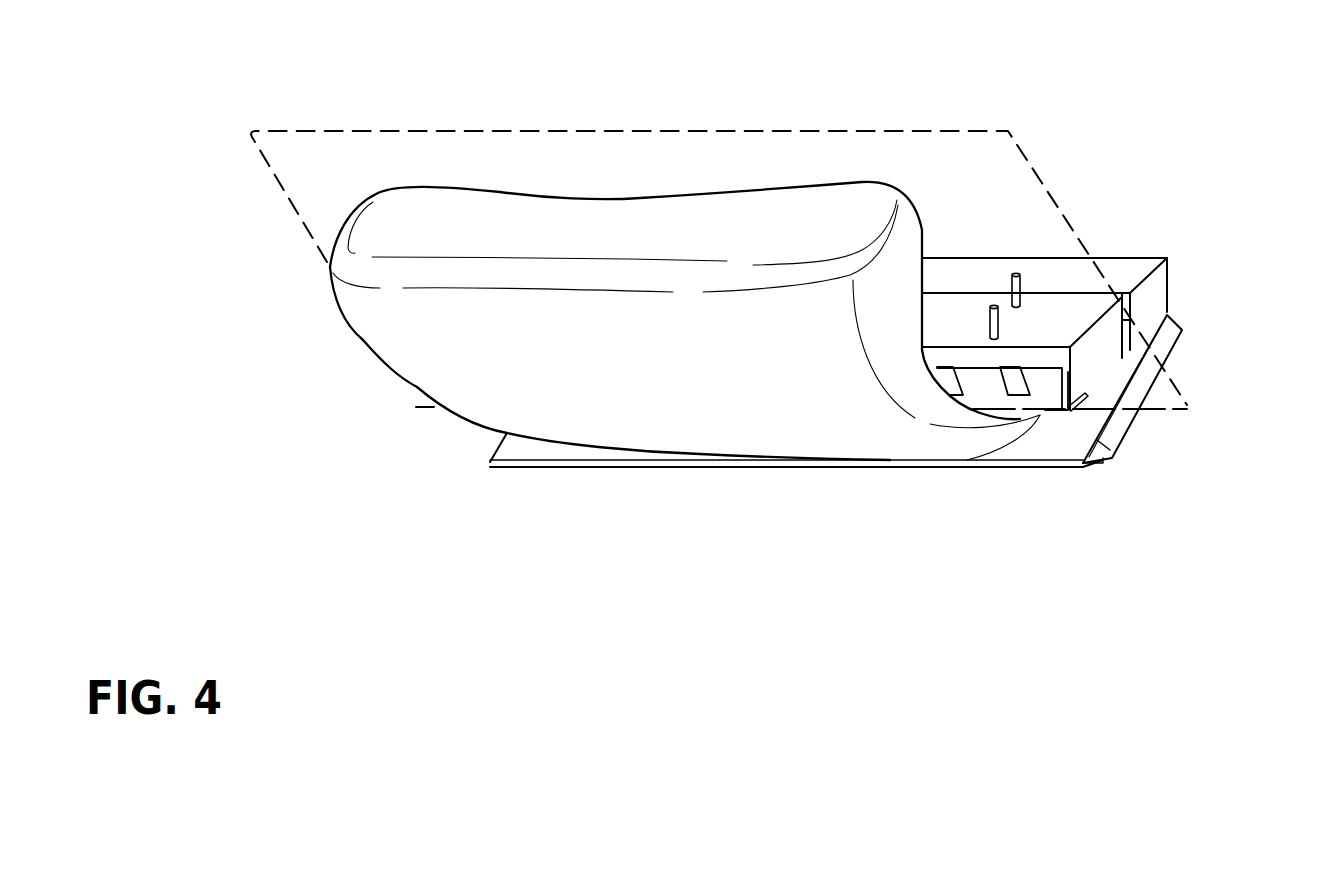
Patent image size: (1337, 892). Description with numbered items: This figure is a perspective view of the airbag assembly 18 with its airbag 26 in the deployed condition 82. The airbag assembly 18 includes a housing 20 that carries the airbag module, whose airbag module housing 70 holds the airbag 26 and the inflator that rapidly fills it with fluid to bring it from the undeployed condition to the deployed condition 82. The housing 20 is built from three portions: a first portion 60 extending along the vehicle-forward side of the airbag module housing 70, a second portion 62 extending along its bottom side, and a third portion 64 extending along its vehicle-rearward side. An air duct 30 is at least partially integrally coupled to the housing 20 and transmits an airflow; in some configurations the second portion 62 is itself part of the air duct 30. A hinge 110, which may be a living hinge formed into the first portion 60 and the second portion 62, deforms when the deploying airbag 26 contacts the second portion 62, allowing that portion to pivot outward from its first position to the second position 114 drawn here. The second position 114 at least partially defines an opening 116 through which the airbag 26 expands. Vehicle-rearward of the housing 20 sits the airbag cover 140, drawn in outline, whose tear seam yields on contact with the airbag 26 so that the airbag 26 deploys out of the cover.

The airbag assembly 18 is at (1097, 118).
The housing 20 is at (975, 258).
The airbag 26 is at (330, 287).
The air duct 30 is at (1147, 397).
The first portion 60 is at (1168, 265).
The second portion 62 is at (1178, 338).
The third portion 64 is at (1022, 415).
The airbag module housing 70 is at (1053, 293).
The deployed condition 82 is at (362, 342).
The hinge 110 is at (1167, 315).
The second position 114 is at (1118, 425).
The opening 116 is at (1078, 435).
The airbag cover 140 is at (287, 202).